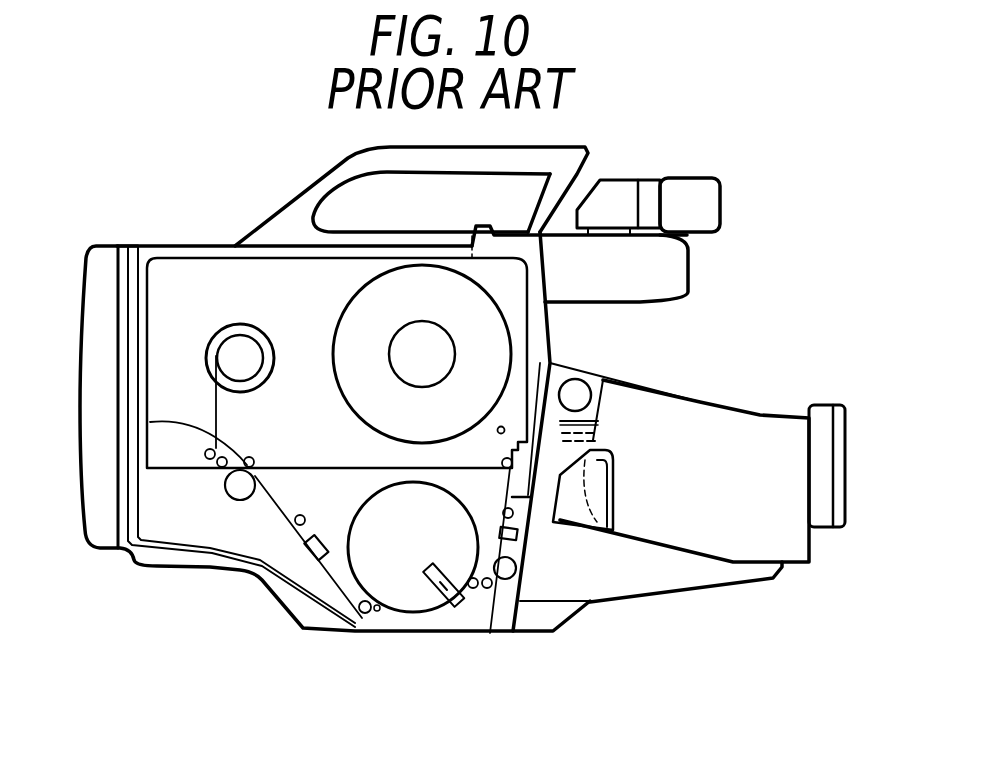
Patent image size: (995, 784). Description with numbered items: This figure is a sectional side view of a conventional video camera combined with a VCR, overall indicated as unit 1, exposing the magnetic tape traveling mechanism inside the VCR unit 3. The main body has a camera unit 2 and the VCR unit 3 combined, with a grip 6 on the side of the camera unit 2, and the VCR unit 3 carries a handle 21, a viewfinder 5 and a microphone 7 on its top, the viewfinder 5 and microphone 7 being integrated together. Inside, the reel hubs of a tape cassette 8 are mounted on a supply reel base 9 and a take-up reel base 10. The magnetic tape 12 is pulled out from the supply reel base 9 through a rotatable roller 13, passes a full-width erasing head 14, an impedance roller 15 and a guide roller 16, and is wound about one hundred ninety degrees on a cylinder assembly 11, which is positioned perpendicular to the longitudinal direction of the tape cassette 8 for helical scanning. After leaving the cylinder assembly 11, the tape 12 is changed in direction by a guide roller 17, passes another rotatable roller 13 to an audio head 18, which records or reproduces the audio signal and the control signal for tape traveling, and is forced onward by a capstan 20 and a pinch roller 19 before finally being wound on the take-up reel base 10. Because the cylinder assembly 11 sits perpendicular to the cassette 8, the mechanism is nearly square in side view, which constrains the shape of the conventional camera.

The video camera 1 is at (110, 238).
The camera unit 2 is at (750, 415).
The VCR unit 3 is at (158, 245).
The viewfinder 5 is at (688, 270).
The grip 6 is at (793, 543).
The microphone 7 is at (700, 178).
The tape cassette 8 is at (195, 282).
The supply reel base 9 is at (493, 342).
The take-up reel base 10 is at (243, 350).
The cylinder assembly 11 is at (413, 595).
The magnetic tape 12 is at (347, 585).
The rotatable roller 13 is at (587, 450).
The full-width erasing head 14 is at (517, 534).
The impedance roller 15 is at (505, 579).
The guide roller 16 is at (487, 589).
The guide roller 17 is at (360, 618).
The audio head 18 is at (318, 556).
The pinch roller 19 is at (237, 495).
The capstan 20 is at (150, 422).
The handle 21 is at (520, 147).